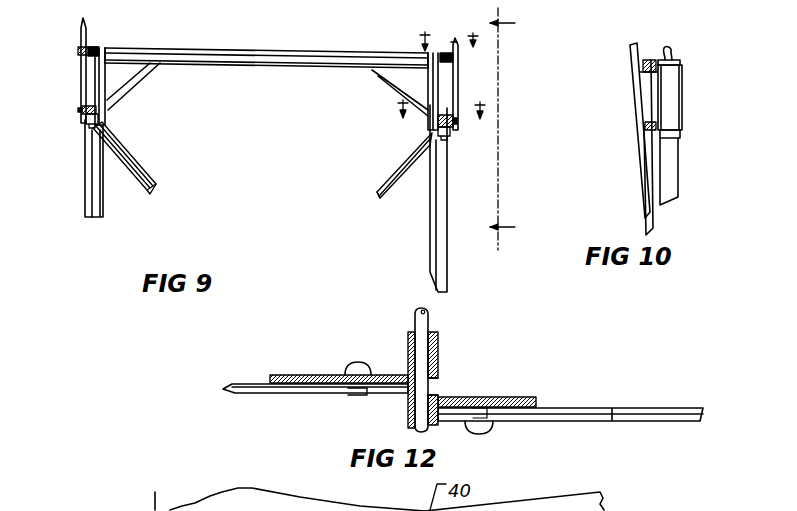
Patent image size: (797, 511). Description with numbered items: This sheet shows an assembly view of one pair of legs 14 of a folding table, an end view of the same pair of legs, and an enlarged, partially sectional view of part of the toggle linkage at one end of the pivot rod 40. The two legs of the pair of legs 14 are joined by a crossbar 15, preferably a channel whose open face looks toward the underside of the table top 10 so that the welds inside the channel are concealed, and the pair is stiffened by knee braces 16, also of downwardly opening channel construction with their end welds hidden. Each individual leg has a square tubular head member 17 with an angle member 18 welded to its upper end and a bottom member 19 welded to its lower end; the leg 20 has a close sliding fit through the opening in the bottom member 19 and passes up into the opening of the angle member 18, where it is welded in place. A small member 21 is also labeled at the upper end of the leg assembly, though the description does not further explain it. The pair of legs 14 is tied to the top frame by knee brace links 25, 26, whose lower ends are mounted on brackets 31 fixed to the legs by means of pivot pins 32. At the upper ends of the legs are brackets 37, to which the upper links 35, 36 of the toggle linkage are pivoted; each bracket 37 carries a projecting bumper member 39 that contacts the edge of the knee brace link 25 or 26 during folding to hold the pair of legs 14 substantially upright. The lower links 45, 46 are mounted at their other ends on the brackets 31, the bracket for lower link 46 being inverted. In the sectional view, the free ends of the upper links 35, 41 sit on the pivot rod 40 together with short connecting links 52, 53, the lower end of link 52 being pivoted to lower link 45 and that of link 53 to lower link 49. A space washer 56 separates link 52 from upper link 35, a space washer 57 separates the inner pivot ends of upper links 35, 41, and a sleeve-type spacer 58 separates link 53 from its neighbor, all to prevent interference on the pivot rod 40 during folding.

In FIG. 9, the table top 10 is at (492, 129).
In FIG. 9, the pair of legs 14 is at (85, 203).
In FIG. 9, the crossbar 15 is at (182, 52).
In FIG. 9, the knee braces 16 is at (147, 92).
In FIG. 10, the square tubular head member 17 is at (682, 95).
In FIG. 10, the angle member 18 is at (678, 60).
In FIG. 10, the bottom member 19 is at (680, 135).
In FIG. 9, the leg 20 is at (93, 177).
In FIG. 10, the leg 20 is at (668, 152).
In FIG. 9, the hook 21 is at (92, 46).
In FIG. 10, the hook 21 is at (673, 53).
In FIG. 9, the knee brace link 25 is at (458, 82).
In FIG. 10, the knee brace link 25 is at (637, 80).
In FIG. 9, the knee brace link 26 is at (81, 77).
In FIG. 9, the brackets 31 is at (82, 122).
In FIG. 10, the brackets 31 is at (647, 125).
In FIG. 9, the pivot pins 32 is at (78, 113).
In FIG. 9, the upper link 35 is at (397, 168).
In FIG. 12, the upper link 35 is at (534, 399).
In FIG. 9, the upper link 36 is at (135, 163).
In FIG. 9, the brackets 37 is at (100, 46).
In FIG. 10, the brackets 37 is at (650, 60).
In FIG. 10, the projecting bumper member 39 is at (652, 60).
In FIG. 12, the pivot rod 40 is at (423, 428).
In FIG. 12, the upper link 41 is at (327, 373).
In FIG. 9, the lower link 45 is at (386, 197).
In FIG. 12, the lower link 45 is at (583, 408).
In FIG. 9, the lower link 46 is at (146, 191).
In FIG. 12, the lower link 49 is at (295, 389).
In FIG. 12, the short connecting link 52 is at (469, 428).
In FIG. 12, the short connecting link 53 is at (404, 368).
In FIG. 12, the space washer 56 is at (408, 413).
In FIG. 12, the space washer 57 is at (438, 392).
In FIG. 12, the sleeve-type spacer 58 is at (438, 360).